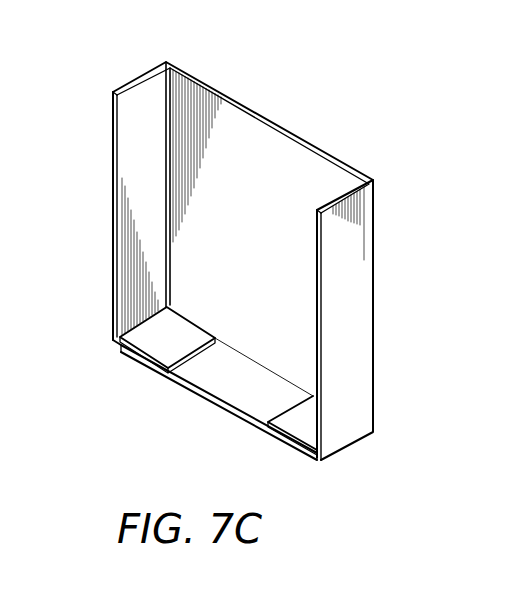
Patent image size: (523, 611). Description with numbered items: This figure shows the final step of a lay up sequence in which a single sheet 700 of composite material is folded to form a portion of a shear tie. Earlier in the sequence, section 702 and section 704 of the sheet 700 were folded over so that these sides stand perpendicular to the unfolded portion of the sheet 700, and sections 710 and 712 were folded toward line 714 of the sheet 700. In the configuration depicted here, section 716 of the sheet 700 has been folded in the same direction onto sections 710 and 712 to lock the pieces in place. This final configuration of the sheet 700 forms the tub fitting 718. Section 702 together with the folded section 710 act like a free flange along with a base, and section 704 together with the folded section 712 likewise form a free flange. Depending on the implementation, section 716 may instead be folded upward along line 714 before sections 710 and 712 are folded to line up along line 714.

The sheet 700 is at (247, 105).
The section 702 is at (142, 108).
The section 704 is at (350, 433).
The section 710 is at (162, 338).
The section 712 is at (300, 423).
The line 714 is at (243, 358).
The section 716 is at (228, 385).
The tub fitting 718 is at (311, 144).